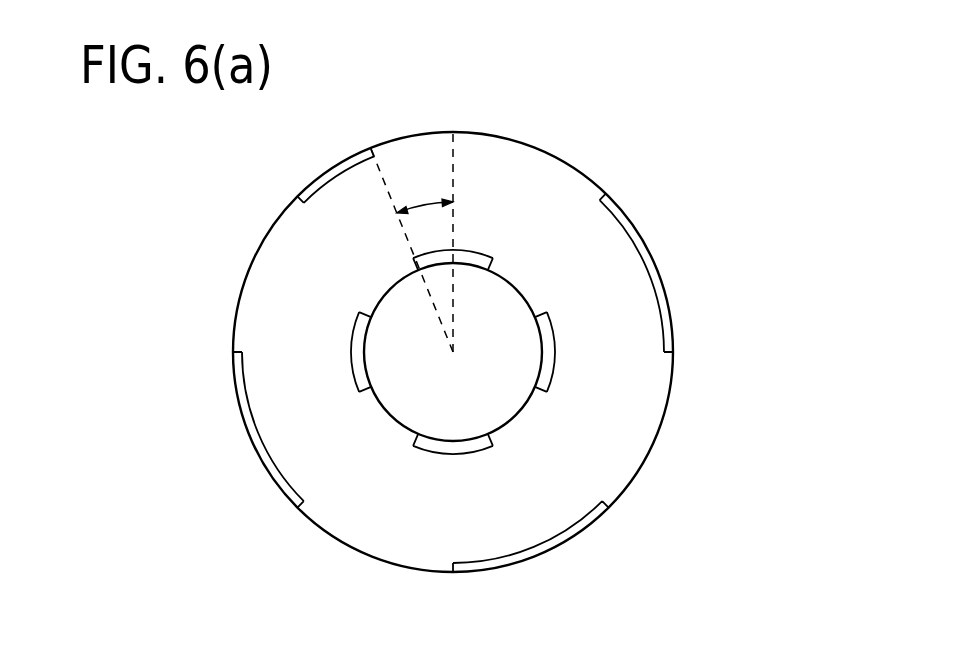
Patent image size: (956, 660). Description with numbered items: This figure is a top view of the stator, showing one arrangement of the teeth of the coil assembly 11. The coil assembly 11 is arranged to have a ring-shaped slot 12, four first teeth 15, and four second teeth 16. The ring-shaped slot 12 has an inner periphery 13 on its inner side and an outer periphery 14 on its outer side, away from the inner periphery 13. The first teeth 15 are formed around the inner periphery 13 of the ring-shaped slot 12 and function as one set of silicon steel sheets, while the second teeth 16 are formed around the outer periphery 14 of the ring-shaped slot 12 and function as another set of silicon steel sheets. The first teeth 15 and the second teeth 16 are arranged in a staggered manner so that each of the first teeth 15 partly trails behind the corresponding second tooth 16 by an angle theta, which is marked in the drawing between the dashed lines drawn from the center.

The coil assembly 11 is at (660, 190).
The ring-shaped slot 12 is at (532, 167).
The inner periphery 13 is at (525, 418).
The outer periphery 14 is at (675, 379).
The first teeth 15 is at (552, 378).
The second teeth 16 is at (661, 305).